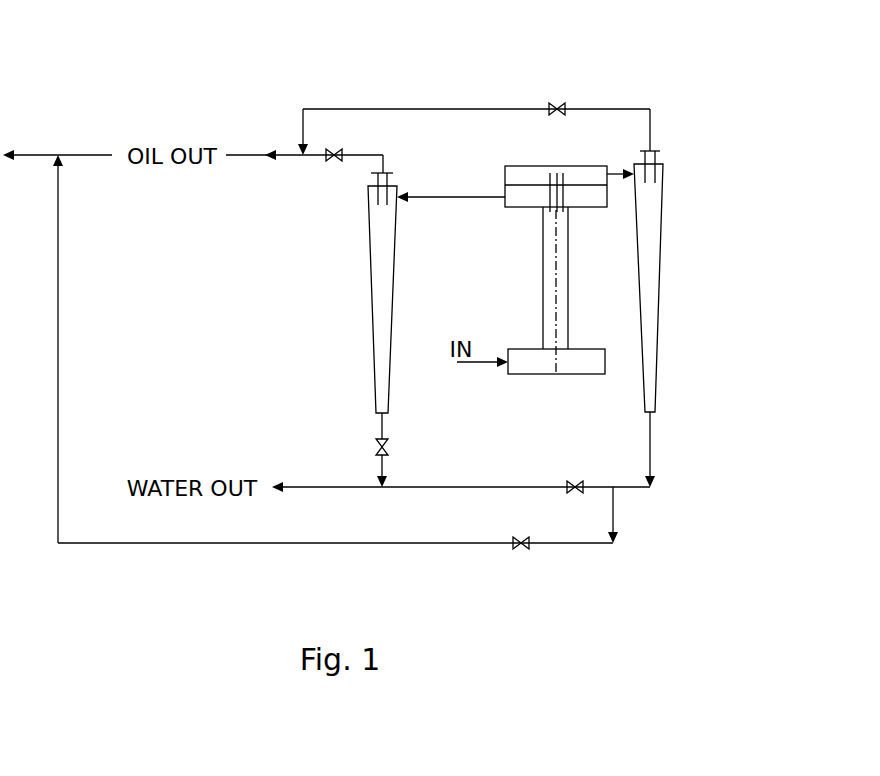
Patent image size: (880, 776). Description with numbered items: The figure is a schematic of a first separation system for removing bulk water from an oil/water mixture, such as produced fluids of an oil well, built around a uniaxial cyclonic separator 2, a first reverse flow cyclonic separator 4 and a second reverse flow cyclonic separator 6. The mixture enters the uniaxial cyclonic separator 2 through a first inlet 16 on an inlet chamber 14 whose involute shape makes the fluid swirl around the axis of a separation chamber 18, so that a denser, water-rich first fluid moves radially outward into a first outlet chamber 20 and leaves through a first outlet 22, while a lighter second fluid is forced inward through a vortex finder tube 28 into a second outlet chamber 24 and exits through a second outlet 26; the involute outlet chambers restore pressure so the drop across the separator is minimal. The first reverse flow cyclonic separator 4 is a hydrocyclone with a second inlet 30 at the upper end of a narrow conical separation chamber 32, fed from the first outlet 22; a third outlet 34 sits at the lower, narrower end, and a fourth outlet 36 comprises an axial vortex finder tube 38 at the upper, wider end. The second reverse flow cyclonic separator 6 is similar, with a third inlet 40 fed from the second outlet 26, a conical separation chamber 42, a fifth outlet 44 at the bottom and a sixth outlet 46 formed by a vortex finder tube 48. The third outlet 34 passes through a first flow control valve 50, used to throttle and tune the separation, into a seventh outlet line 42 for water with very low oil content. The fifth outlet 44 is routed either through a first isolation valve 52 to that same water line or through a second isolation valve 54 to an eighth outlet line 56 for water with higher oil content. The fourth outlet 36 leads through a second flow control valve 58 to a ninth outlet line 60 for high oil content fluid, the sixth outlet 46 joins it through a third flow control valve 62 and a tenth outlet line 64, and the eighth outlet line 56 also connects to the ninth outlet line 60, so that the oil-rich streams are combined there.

The uniaxial cyclonic separator 2 is at (476, 272).
The first reverse flow cyclonic separator 4 is at (340, 334).
The second reverse flow cyclonic separator 6 is at (685, 203).
The inlet chamber 14 is at (560, 375).
The first inlet 16 is at (480, 365).
The separation chamber 18 is at (557, 278).
The first outlet chamber 20 is at (518, 200).
The first outlet 22 is at (462, 197).
The second outlet chamber 24 is at (518, 173).
The second outlet 26 is at (613, 172).
The vortex finder tube 28 is at (552, 185).
The second inlet 30 is at (410, 193).
The separation chamber 32 is at (370, 280).
The third outlet 34 is at (378, 428).
The fourth outlet 36 is at (383, 175).
The vortex finder tube 38 is at (378, 200).
The third inlet 40 is at (630, 178).
The separation chamber 42 is at (661, 290).
The fifth outlet 44 is at (652, 430).
The sixth outlet 46 is at (650, 130).
The vortex finder tube 48 is at (663, 175).
The first flow control valve 50 is at (392, 450).
The first isolation valve 52 is at (575, 480).
The second isolation valve 54 is at (523, 545).
The eighth outlet line 56 is at (385, 545).
The second flow control valve 58 is at (332, 160).
The ninth outlet line 60 is at (275, 158).
The third flow control valve 62 is at (560, 105).
The tenth outlet line 64 is at (405, 109).